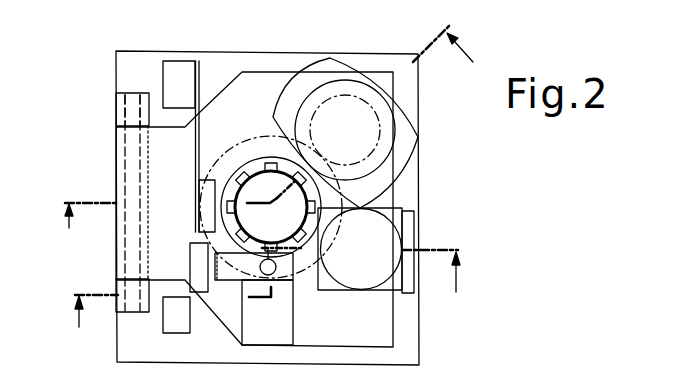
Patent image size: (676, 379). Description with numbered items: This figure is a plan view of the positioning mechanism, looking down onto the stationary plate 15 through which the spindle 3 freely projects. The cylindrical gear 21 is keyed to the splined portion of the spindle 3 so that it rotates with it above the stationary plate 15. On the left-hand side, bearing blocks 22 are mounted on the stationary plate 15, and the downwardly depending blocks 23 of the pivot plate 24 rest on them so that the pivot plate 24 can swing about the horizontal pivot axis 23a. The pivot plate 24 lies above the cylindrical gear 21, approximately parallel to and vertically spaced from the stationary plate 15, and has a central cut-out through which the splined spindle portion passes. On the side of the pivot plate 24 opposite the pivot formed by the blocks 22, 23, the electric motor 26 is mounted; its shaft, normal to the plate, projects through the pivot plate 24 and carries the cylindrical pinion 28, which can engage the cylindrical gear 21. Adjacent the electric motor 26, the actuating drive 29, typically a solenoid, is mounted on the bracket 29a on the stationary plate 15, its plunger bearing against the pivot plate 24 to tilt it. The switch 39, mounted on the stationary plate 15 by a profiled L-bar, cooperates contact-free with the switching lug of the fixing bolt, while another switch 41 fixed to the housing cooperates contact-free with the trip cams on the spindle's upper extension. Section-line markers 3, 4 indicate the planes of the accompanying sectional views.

The stationary plate 15 is at (411, 183).
The cylindrical gear 21 is at (232, 148).
The bearing blocks 22 is at (118, 103).
The downwardly depending blocks 23 is at (118, 158).
The horizontal pivot axis 23a is at (133, 93).
The pivot plate 24 is at (384, 333).
The electric motor 26 is at (364, 86).
The cylindrical pinion 28 is at (383, 130).
The actuating drive 29 is at (357, 288).
The bracket 29a is at (394, 288).
The switch 39 is at (198, 260).
The switch 41 is at (205, 203).
The spindle 3 is at (266, 301).
The section line IV 4 is at (273, 141).